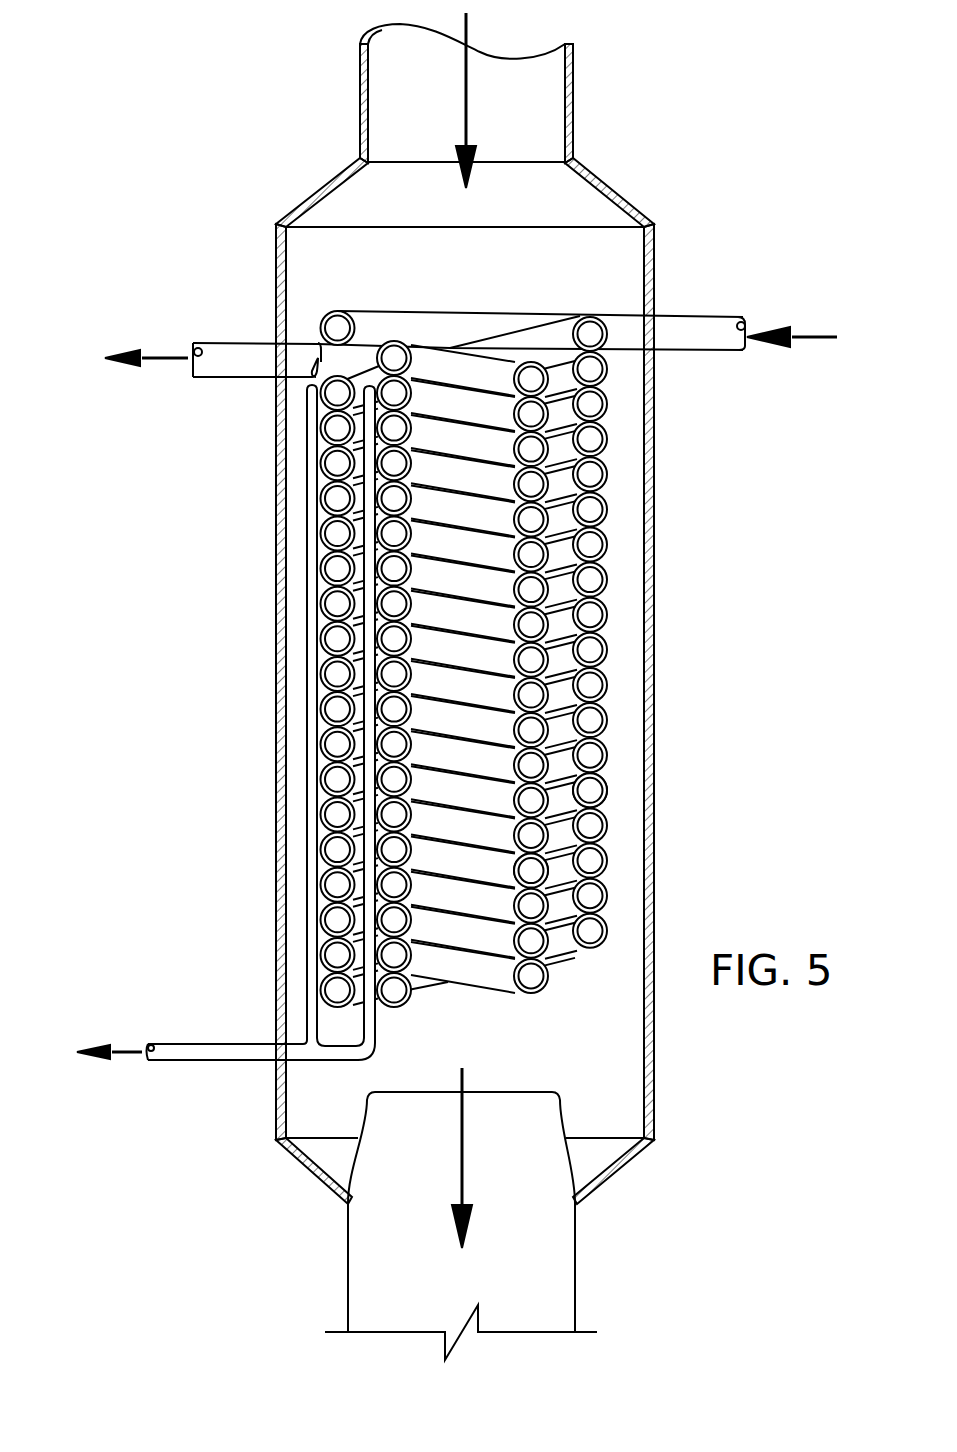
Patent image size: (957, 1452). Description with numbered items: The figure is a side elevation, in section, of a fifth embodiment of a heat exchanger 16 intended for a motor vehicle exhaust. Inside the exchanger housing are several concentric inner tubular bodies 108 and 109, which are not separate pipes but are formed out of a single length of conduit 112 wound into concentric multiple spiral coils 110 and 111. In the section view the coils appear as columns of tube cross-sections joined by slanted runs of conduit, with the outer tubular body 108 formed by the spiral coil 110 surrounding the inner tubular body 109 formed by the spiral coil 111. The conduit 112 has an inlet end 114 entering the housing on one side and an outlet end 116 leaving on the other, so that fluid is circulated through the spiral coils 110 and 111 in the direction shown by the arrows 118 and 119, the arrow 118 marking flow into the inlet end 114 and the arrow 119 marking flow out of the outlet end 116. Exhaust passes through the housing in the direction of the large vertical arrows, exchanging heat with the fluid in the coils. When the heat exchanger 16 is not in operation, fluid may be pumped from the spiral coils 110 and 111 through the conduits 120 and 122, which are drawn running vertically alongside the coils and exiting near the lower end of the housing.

The heat exchanger 16 is at (222, 212).
The inner tubular body 108 is at (612, 702).
The inner tubular body 109 is at (552, 593).
The spiral coil 110 is at (595, 793).
The spiral coil 111 is at (535, 872).
The conduit 112 is at (690, 315).
The inlet end 114 is at (703, 339).
The outlet end 116 is at (240, 356).
The arrow 118 is at (812, 336).
The arrow 119 is at (172, 363).
The conduit 120 is at (370, 672).
The conduit 122 is at (315, 768).